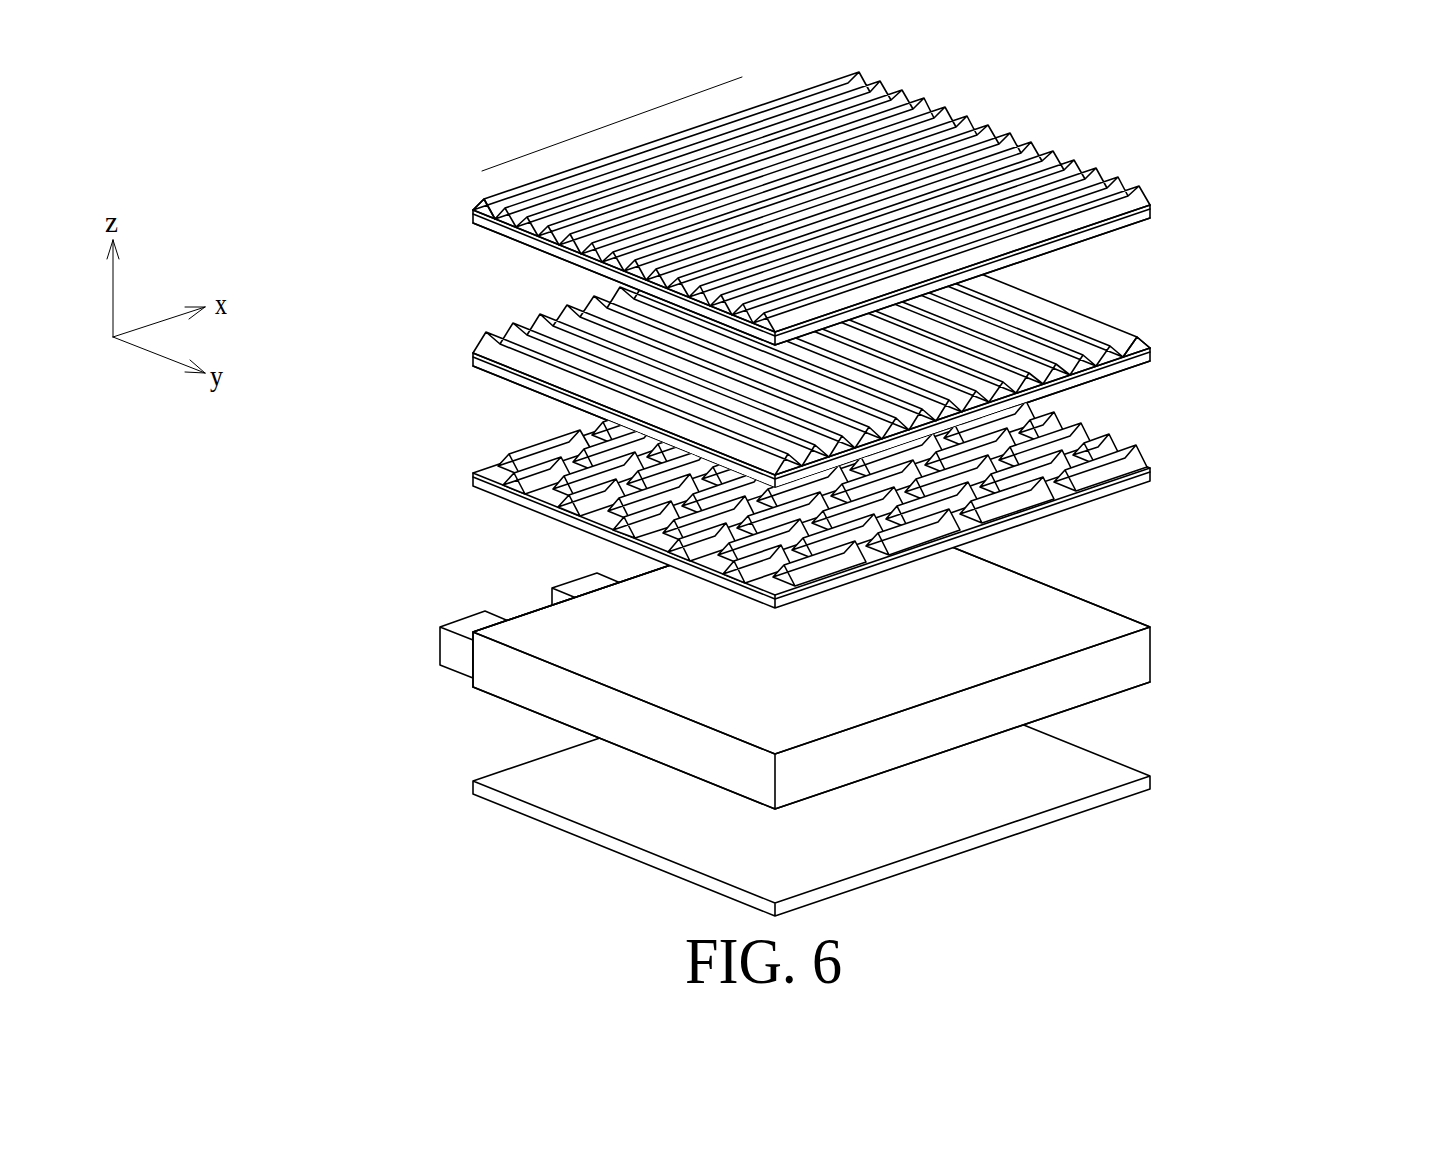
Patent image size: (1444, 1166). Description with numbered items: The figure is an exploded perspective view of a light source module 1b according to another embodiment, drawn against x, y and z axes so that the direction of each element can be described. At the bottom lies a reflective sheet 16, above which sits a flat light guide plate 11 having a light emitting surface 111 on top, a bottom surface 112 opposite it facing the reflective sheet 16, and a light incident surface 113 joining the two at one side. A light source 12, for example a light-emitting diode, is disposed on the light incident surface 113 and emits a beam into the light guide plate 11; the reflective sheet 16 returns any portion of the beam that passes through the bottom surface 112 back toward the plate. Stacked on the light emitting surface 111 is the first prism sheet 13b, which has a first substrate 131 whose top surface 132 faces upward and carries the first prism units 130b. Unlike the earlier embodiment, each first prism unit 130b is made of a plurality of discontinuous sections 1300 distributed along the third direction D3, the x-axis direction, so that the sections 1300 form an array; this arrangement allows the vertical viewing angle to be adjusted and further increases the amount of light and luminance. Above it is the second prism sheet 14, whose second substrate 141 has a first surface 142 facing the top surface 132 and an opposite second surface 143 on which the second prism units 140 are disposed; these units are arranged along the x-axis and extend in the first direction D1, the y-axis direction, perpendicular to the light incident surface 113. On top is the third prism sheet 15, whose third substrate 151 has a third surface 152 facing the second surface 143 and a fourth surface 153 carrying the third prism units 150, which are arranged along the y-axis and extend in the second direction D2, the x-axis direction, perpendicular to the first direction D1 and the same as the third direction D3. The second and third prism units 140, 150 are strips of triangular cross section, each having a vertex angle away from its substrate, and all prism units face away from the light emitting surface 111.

The light source module 1b is at (362, 143).
The light guide plate 11 is at (354, 678).
The light emitting surface 111 is at (491, 638).
The bottom surface 112 is at (495, 715).
The light incident surface 113 is at (469, 669).
The light source 12 is at (473, 628).
The first prism sheet 13b is at (1370, 438).
The discontinuous sections 1300 is at (1128, 453).
The first prism unit 130b is at (822, 460).
The first substrate 131 is at (1062, 509).
The top surface 132 is at (1104, 494).
The second prism sheet 14 is at (1308, 314).
The second prism units 140 is at (1137, 333).
The second substrate 141 is at (1245, 354).
The first surface 142 is at (1127, 376).
The second surface 143 is at (1149, 349).
The third prism sheet 15 is at (1273, 178).
The third prism units 150 is at (1135, 188).
The third substrate 151 is at (1210, 242).
The third surface 152 is at (1067, 251).
The fourth surface 153 is at (1105, 226).
The reflective sheet 16 is at (1123, 790).
The first direction D1 is at (922, 70).
The second direction D2 is at (722, 90).
The third direction D3 is at (612, 124).